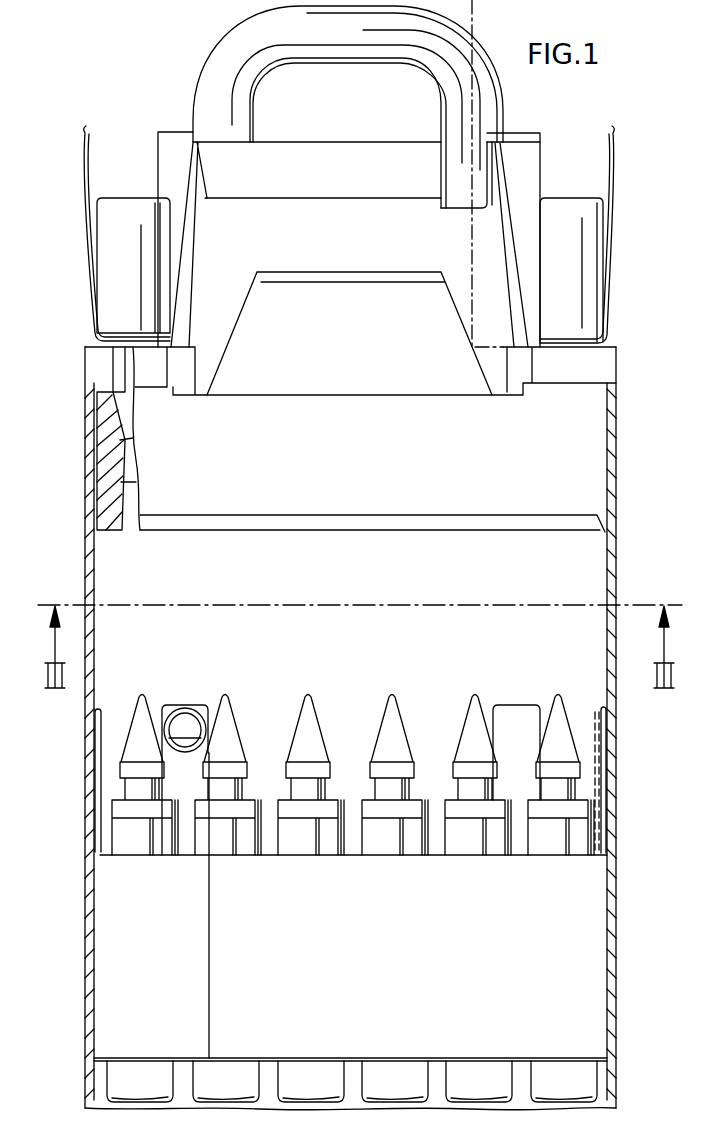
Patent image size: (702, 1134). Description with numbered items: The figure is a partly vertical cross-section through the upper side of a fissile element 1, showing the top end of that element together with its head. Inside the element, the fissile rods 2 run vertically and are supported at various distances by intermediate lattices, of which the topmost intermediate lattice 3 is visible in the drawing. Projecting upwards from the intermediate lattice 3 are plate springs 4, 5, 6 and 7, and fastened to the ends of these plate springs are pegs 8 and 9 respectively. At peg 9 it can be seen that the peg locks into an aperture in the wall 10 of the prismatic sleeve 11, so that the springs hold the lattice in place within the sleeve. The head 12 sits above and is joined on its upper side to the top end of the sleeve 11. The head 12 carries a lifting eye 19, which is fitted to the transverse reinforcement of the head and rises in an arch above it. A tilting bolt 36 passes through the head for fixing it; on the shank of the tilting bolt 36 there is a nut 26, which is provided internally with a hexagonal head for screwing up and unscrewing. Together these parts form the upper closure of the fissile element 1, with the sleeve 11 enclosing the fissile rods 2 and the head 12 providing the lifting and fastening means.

The fissile element 1 is at (612, 1105).
The fissile rods 2 is at (156, 1091).
The intermediate lattice 3 is at (449, 959).
The plate spring 4 is at (103, 712).
The plate spring 5 is at (209, 668).
The plate spring 6 is at (510, 720).
The plate spring 7 is at (603, 707).
The peg 8 is at (192, 753).
The peg 9 is at (614, 725).
The wall 10 is at (615, 660).
The prismatic sleeve 11 is at (613, 563).
The head 12 is at (598, 368).
The lifting eye 19 is at (228, 55).
The nut 26 is at (106, 254).
The tilting bolt 36 is at (108, 457).